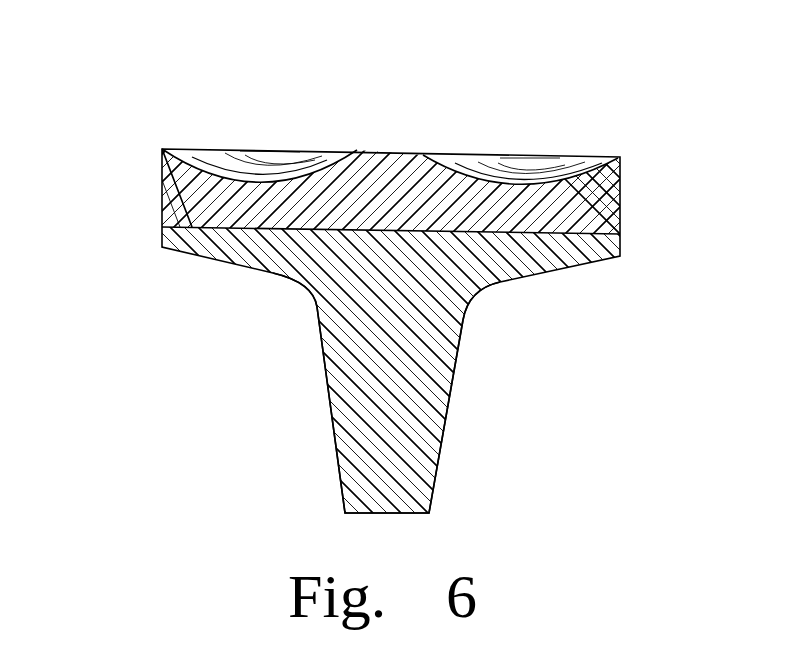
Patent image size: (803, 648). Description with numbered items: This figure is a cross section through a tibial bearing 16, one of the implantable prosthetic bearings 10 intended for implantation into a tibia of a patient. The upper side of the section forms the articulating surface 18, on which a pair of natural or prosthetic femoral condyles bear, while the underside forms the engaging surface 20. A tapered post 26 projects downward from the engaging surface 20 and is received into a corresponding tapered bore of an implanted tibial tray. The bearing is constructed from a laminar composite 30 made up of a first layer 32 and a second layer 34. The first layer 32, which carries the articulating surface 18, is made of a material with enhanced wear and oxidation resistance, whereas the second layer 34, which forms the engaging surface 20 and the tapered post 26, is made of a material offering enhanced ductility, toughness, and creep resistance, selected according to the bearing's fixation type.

The implantable prosthetic bearing 10 is at (100, 84).
The tibial bearing 16 is at (540, 131).
The articulating surface 18 is at (191, 159).
The engaging surface 20 is at (278, 272).
The tapered post 26 is at (337, 459).
The laminar composite 30 is at (626, 231).
The first layer 32 is at (162, 197).
The second layer 34 is at (563, 264).